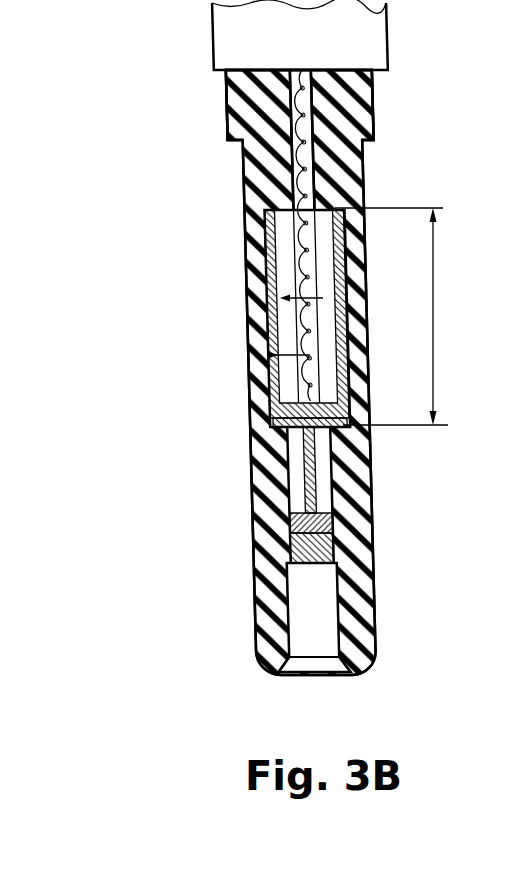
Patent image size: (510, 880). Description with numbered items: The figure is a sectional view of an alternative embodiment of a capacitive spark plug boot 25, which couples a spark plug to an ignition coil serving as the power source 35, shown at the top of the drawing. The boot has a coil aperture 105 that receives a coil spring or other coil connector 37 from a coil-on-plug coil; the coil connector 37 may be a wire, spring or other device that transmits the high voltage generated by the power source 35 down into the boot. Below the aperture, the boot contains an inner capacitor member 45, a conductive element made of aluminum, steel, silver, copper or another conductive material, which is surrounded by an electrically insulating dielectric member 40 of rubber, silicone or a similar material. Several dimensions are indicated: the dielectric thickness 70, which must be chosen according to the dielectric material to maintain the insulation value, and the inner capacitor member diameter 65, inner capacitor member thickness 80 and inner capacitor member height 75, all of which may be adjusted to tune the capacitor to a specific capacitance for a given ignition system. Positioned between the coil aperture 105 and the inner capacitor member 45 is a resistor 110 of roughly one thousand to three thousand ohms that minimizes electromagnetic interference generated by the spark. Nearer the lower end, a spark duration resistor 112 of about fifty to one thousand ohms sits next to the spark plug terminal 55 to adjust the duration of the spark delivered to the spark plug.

The spark plug boot 25 is at (177, 139).
The power source 35 is at (232, 35).
The coil connector 37 is at (303, 115).
The dielectric member 40 is at (353, 120).
The coil aperture 105 is at (310, 188).
The inner capacitor member diameter 65 is at (352, 242).
The inner capacitor member thickness 80 is at (240, 298).
The dielectric thickness 70 is at (240, 355).
The inner capacitor member 45 is at (247, 380).
The resistor 110 is at (250, 418).
The inner capacitor member height 75 is at (435, 337).
The spark duration resistor 112 is at (340, 525).
The spark plug terminal 55 is at (312, 510).